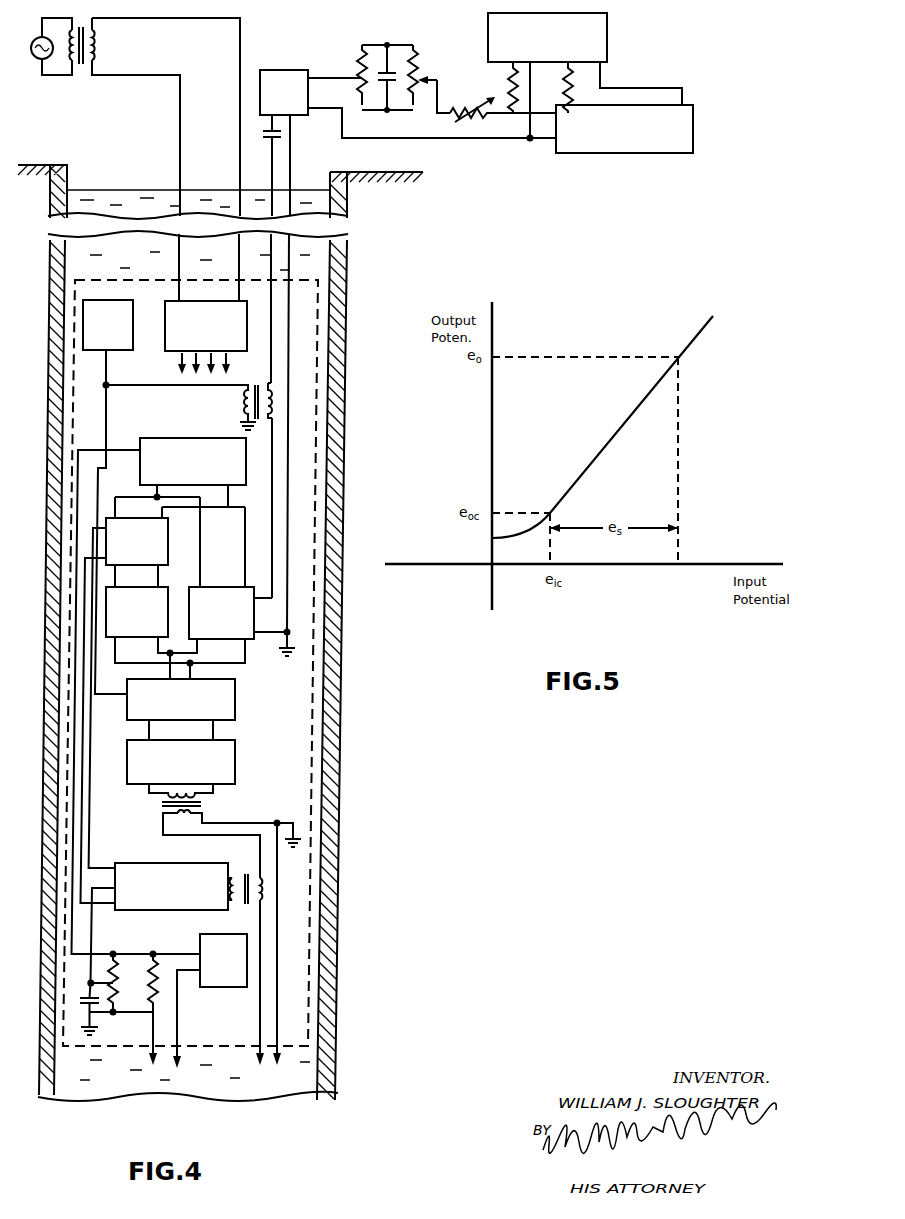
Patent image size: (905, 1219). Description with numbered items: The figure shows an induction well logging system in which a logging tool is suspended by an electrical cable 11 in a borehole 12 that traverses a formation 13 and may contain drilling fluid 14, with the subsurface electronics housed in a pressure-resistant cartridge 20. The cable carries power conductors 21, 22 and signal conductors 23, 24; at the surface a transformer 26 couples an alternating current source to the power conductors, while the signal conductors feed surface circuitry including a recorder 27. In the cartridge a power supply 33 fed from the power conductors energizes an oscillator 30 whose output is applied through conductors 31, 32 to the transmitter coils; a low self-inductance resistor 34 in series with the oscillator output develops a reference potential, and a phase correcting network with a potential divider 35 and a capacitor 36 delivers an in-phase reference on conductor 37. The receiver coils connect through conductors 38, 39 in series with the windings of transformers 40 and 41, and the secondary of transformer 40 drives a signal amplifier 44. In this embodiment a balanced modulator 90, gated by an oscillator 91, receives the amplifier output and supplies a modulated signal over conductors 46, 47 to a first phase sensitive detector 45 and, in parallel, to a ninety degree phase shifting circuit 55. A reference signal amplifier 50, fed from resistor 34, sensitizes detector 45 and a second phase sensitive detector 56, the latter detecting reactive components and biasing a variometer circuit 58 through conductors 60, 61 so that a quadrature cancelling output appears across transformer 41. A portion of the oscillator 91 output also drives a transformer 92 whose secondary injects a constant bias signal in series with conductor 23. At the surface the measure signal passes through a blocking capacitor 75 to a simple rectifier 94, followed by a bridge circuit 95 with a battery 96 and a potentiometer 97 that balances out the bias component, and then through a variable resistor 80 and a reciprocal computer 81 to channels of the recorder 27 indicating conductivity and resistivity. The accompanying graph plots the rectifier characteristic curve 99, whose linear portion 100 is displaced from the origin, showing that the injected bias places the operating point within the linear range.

In FIG. 4, the electrical cable 11 is at (170, 254).
In FIG. 4, the borehole 12 is at (317, 1068).
In FIG. 4, the formation 13 is at (44, 512).
In FIG. 4, the drilling fluid 14 is at (110, 1087).
In FIG. 4, the pressure-resistant cartridge 20 is at (62, 642).
In FIG. 4, the power conductor 21 is at (180, 118).
In FIG. 4, the power conductor 22 is at (240, 178).
In FIG. 4, the signal conductor 23 is at (272, 180).
In FIG. 4, the signal conductor 24 is at (290, 162).
In FIG. 4, the transformer 26 is at (83, 68).
In FIG. 4, the recorder 27 is at (609, 46).
In FIG. 4, the oscillator 30 is at (200, 936).
In FIG. 4, the conductor 31 is at (151, 1021).
In FIG. 4, the conductor 32 is at (178, 1030).
In FIG. 4, the power supply 33 is at (208, 301).
In FIG. 4, the resistor 34 is at (151, 964).
In FIG. 4, the potential divider 35 is at (110, 962).
In FIG. 4, the capacitor 36 is at (84, 1002).
In FIG. 4, the conductor 37 is at (92, 946).
In FIG. 4, the conductor 38 is at (258, 912).
In FIG. 4, the conductor 39 is at (278, 932).
In FIG. 4, the transformer 40 is at (206, 801).
In FIG. 4, the transformer 41 is at (243, 875).
In FIG. 4, the signal amplifier 44 is at (235, 763).
In FIG. 4, the first phase sensitive detector 45 is at (215, 587).
In FIG. 4, the conductor 46 is at (166, 654).
In FIG. 4, the conductor 47 is at (192, 672).
In FIG. 4, the reference signal amplifier 50 is at (207, 438).
In FIG. 4, the phase shifting circuit 55 is at (167, 597).
In FIG. 4, the second phase sensitive detector 56 is at (168, 545).
In FIG. 4, the variometer circuit 58 is at (157, 863).
In FIG. 4, the conductor 60 is at (89, 846).
In FIG. 4, the conductor 61 is at (89, 776).
In FIG. 4, the blocking capacitor 75 is at (268, 134).
In FIG. 4, the variable resistor 80 is at (458, 109).
In FIG. 4, the reciprocal computer 81 is at (693, 135).
In FIG. 4, the balanced modulator 90 is at (235, 708).
In FIG. 4, the oscillator 91 is at (104, 300).
In FIG. 4, the transformer 92 is at (252, 385).
In FIG. 4, the rectifier 94 is at (296, 70).
In FIG. 4, the bridge circuit 95 is at (360, 50).
In FIG. 4, the battery 96 is at (392, 77).
In FIG. 4, the potentiometer 97 is at (422, 68).
In FIG. 5, the rectifier characteristic curve 99 is at (507, 537).
In FIG. 5, the linear portion 100 is at (568, 492).